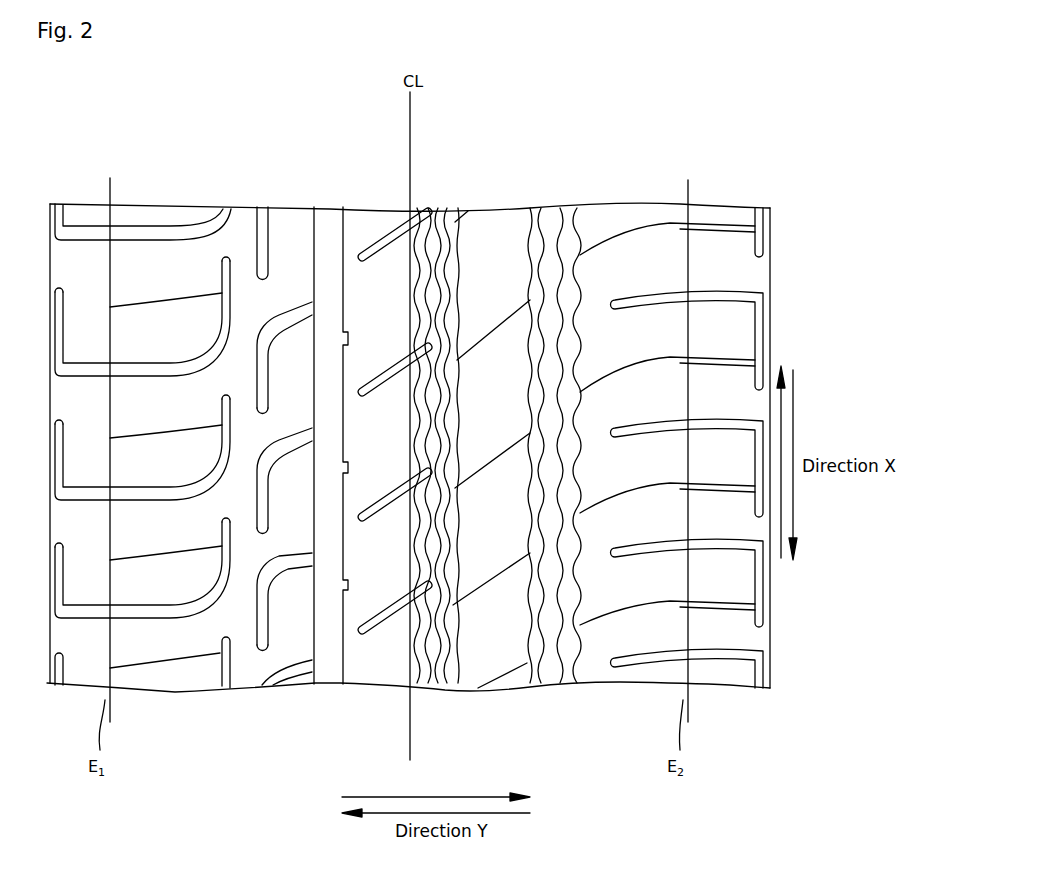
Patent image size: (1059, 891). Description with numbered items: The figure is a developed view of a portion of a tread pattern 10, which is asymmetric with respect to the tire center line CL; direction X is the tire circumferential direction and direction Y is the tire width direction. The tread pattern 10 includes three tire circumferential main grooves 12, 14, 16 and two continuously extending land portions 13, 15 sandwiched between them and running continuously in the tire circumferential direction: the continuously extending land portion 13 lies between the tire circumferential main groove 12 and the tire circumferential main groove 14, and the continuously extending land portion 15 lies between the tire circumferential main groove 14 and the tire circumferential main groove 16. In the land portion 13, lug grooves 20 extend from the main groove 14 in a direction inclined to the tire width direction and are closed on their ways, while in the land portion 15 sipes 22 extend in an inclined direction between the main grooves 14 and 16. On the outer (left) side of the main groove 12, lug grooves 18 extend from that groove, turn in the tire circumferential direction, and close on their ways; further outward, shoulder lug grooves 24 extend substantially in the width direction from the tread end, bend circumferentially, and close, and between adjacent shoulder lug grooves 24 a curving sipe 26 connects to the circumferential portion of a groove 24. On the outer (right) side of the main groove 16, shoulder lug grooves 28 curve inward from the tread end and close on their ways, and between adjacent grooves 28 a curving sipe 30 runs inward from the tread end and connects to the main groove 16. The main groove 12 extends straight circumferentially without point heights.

The tread pattern 10 is at (643, 175).
The tire circumferential main groove 12 is at (325, 214).
The continuously extending land portion 13 is at (363, 672).
The tire circumferential main groove 14 is at (435, 216).
The continuously extending land portion 15 is at (476, 672).
The tire circumferential main groove 16 is at (552, 216).
The lug grooves 18 is at (300, 298).
The lug grooves 20 is at (382, 230).
The sipes 22 is at (497, 322).
The shoulder lug grooves 24 is at (150, 358).
The sipe 26 is at (203, 296).
The shoulder lug grooves 28 is at (717, 292).
The sipe 30 is at (663, 357).